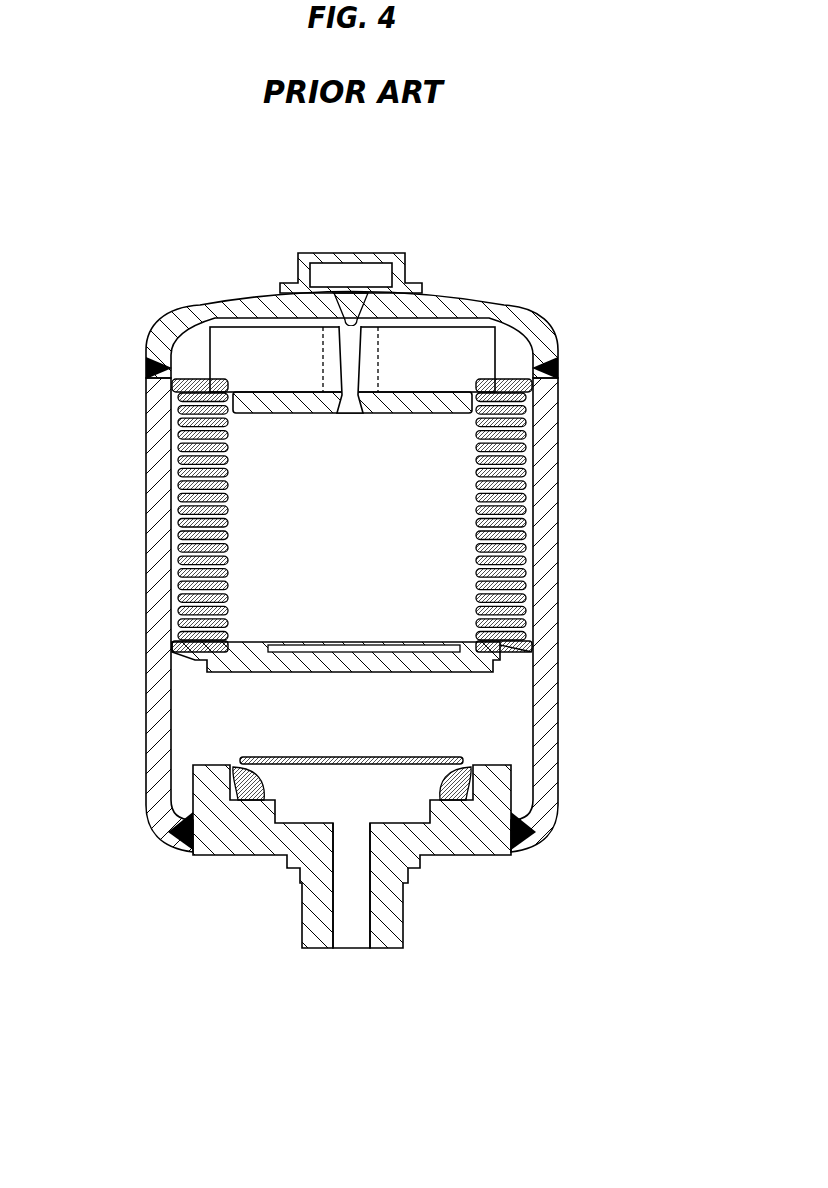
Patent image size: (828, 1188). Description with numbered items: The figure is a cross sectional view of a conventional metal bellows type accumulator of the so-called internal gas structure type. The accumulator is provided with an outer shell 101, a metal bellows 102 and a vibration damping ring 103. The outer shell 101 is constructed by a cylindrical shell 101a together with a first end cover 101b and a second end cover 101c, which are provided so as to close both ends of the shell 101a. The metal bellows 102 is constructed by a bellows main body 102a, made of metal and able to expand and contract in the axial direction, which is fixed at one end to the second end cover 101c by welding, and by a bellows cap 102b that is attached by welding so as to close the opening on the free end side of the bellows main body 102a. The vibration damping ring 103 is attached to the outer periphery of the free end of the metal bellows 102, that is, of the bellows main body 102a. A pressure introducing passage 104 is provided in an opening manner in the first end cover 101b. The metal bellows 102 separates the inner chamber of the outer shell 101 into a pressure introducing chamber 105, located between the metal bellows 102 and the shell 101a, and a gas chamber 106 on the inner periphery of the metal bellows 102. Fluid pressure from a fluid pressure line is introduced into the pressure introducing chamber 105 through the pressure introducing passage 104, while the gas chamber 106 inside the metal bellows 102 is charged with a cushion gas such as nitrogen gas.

The outer shell 101 is at (381, 579).
The cylindrical shell 101a is at (541, 527).
The first end cover 101b is at (484, 858).
The second end cover 101c is at (486, 306).
The metal bellows 102 is at (288, 562).
The bellows main body 102a is at (178, 494).
The bellows cap 102b is at (333, 662).
The vibration damping ring 103 is at (535, 654).
The pressure introducing passage 104 is at (354, 922).
The pressure introducing chamber 105 is at (455, 725).
The gas chamber 106 is at (427, 496).